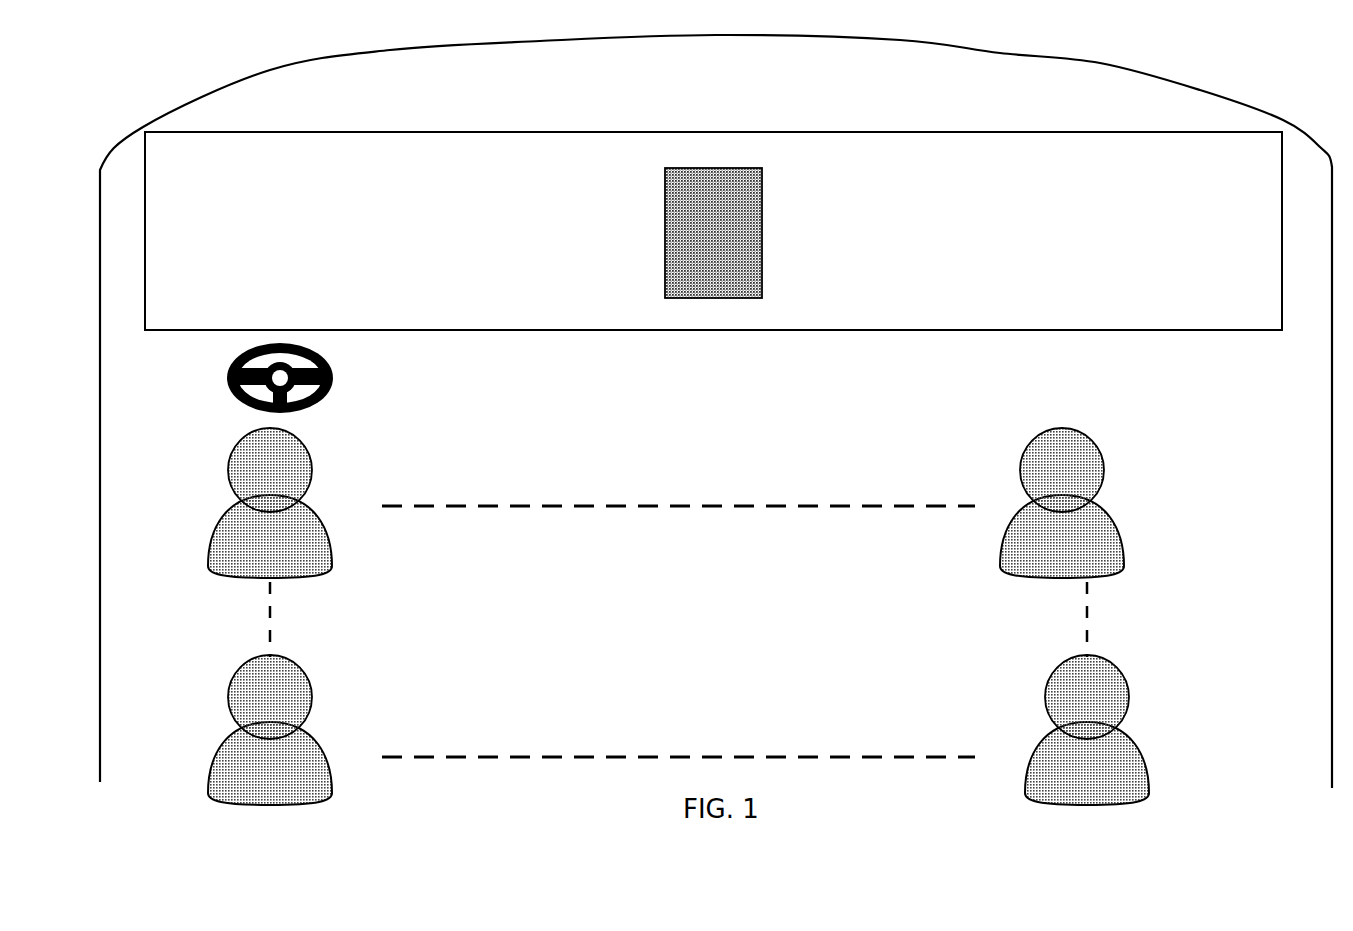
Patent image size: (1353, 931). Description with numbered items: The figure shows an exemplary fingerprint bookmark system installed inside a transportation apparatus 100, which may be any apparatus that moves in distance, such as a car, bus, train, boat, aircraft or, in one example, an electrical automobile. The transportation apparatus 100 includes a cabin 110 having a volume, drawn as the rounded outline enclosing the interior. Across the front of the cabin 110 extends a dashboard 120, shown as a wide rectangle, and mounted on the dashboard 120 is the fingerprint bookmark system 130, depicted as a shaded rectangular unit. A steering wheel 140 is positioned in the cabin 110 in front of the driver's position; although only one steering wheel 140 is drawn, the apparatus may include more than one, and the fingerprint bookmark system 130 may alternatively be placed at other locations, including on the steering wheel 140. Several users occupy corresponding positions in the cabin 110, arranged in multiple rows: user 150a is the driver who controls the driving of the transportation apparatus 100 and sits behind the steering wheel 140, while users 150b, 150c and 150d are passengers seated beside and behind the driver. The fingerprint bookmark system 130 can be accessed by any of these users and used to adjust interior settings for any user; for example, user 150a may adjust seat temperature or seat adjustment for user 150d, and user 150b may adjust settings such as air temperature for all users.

The transportation apparatus 100 is at (1210, 92).
The cabin 110 is at (727, 87).
The dashboard 120 is at (787, 132).
The fingerprint bookmark system 130 is at (764, 247).
The steering wheel 140 is at (333, 374).
The user (driver) 150a is at (308, 456).
The user (passenger) 150b is at (1090, 444).
The user (passenger) 150c is at (306, 680).
The user (passenger) 150d is at (1122, 676).